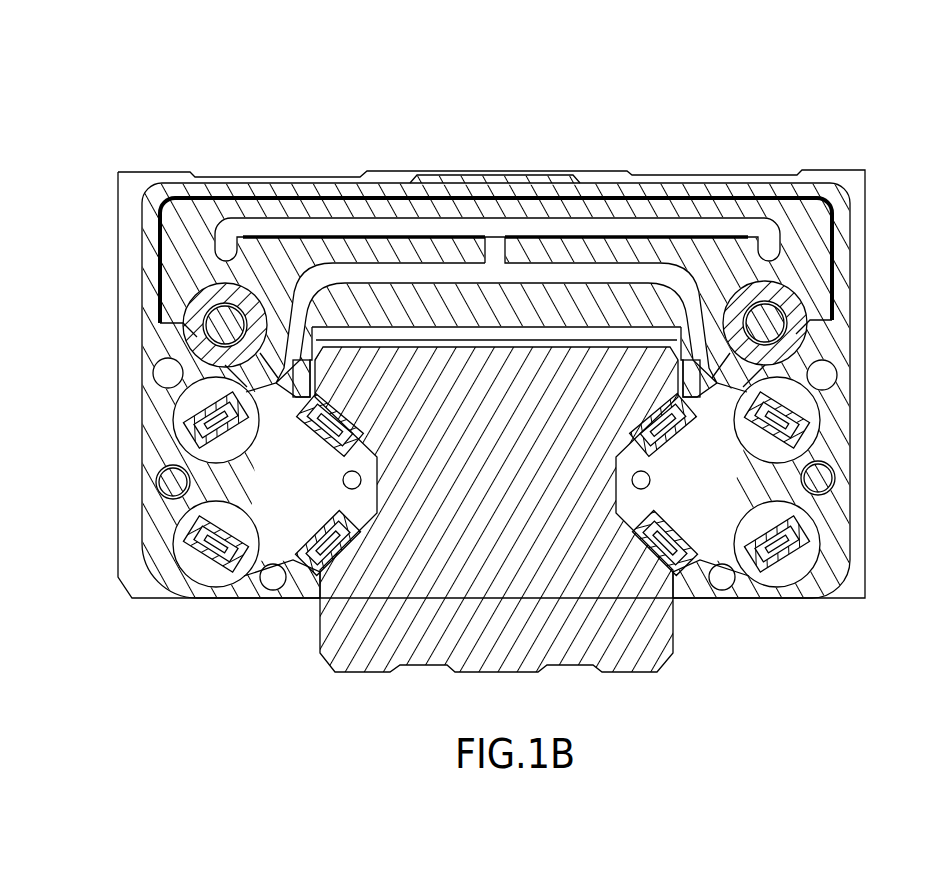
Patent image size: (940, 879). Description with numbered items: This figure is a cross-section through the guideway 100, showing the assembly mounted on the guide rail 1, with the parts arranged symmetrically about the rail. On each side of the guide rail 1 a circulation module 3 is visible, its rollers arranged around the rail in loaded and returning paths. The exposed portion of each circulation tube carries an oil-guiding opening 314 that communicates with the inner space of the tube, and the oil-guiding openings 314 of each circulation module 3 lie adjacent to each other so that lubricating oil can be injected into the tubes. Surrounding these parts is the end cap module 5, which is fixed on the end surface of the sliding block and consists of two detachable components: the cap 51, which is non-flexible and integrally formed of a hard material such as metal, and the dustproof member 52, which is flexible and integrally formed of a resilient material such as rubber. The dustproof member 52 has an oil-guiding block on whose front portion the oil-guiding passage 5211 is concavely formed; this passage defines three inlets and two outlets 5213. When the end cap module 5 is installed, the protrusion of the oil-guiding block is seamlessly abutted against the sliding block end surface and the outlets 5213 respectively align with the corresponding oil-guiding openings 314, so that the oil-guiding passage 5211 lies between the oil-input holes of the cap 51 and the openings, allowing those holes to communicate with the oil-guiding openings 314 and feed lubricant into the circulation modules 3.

The guideway 100 is at (96, 50).
The guide rail 1 is at (673, 650).
The circulation module 3 is at (178, 441).
The oil-guiding opening 314 is at (276, 385).
The end cap module 5 is at (491, 341).
The cap 51 is at (292, 190).
The dustproof member 52 is at (201, 212).
The oil-guiding passage 5211 is at (387, 229).
The outlet 5213 is at (258, 333).